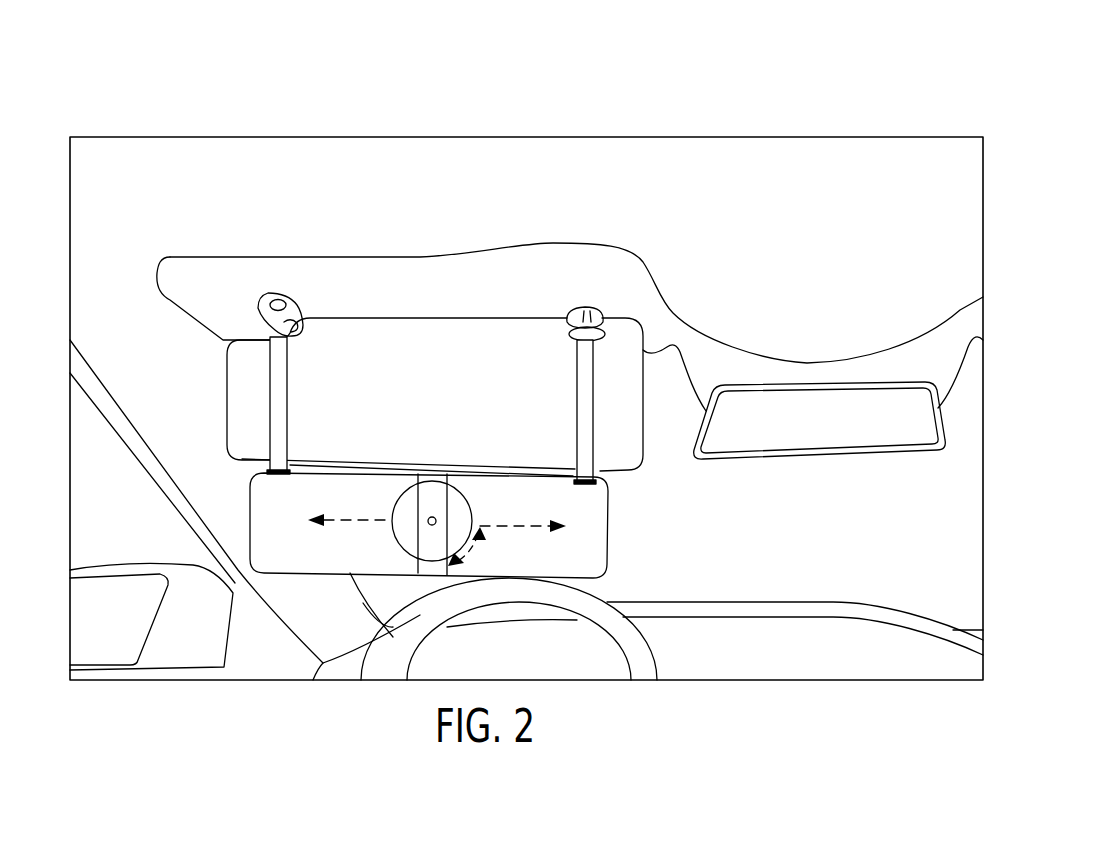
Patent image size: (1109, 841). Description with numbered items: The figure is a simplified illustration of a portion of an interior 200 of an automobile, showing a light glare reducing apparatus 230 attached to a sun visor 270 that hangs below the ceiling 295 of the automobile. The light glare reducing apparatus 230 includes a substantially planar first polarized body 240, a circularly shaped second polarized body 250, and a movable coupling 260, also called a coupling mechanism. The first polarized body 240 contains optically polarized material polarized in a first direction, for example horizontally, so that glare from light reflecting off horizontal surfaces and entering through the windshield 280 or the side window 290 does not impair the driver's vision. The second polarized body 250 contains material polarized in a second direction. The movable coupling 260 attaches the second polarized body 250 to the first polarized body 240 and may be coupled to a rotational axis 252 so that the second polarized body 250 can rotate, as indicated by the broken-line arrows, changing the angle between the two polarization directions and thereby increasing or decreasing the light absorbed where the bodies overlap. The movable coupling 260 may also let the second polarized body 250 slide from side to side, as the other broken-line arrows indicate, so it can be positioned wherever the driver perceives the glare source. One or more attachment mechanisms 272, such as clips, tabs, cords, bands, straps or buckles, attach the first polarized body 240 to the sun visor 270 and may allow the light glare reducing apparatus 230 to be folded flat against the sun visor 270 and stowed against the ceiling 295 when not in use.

The interior 200 is at (300, 85).
The ceiling 295 is at (402, 289).
The sun visor 270 is at (487, 318).
The attachment mechanisms 272 is at (290, 400).
The first polarized body 240 is at (559, 573).
The second polarized body 250 is at (466, 506).
The rotational axis 252 is at (430, 519).
The movable coupling 260 is at (417, 560).
The light glare reducing apparatus 230 is at (668, 558).
The windshield 280 is at (866, 530).
The side window 290 is at (136, 508).